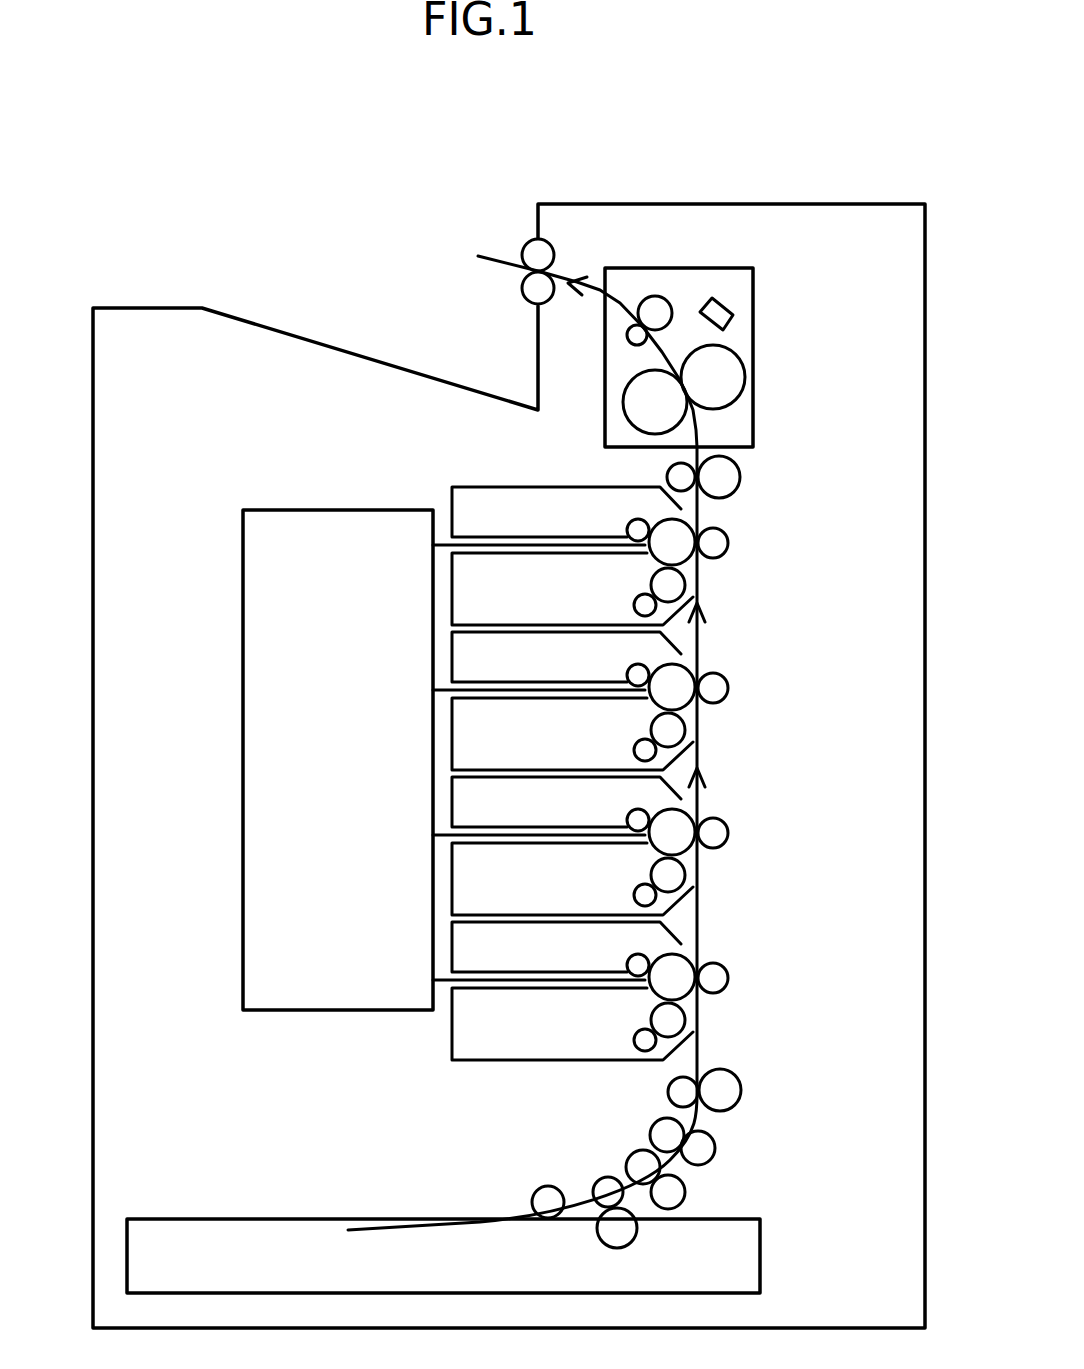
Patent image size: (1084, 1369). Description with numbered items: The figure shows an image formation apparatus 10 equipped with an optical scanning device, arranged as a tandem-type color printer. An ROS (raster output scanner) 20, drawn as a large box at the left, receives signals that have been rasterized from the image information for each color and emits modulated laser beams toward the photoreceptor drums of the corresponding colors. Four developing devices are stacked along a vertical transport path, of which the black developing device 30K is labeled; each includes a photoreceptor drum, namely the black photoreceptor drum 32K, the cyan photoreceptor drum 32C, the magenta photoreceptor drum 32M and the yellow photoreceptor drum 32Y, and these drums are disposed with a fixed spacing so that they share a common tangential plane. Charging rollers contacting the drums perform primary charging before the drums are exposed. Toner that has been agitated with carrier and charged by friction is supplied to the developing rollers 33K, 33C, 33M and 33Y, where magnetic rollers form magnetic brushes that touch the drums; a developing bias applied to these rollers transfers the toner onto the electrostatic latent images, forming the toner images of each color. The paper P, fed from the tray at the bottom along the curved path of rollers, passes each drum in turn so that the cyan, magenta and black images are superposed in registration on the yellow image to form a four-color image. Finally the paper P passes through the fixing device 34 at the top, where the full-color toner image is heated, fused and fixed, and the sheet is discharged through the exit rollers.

The image formation apparatus 10 is at (164, 210).
The ROS (raster output scanner) 20 is at (263, 590).
The developing device 30K is at (488, 512).
The photoreceptor drum 32K is at (676, 528).
The developing roller 33K is at (678, 585).
The photoreceptor drum 32C is at (676, 673).
The developing roller 33C is at (678, 730).
The photoreceptor drum 32M is at (676, 818).
The developing roller 33M is at (678, 875).
The photoreceptor drum 32Y is at (676, 963).
The developing roller 33Y is at (678, 1020).
The fixing device 34 is at (695, 287).
The paper P is at (700, 1055).